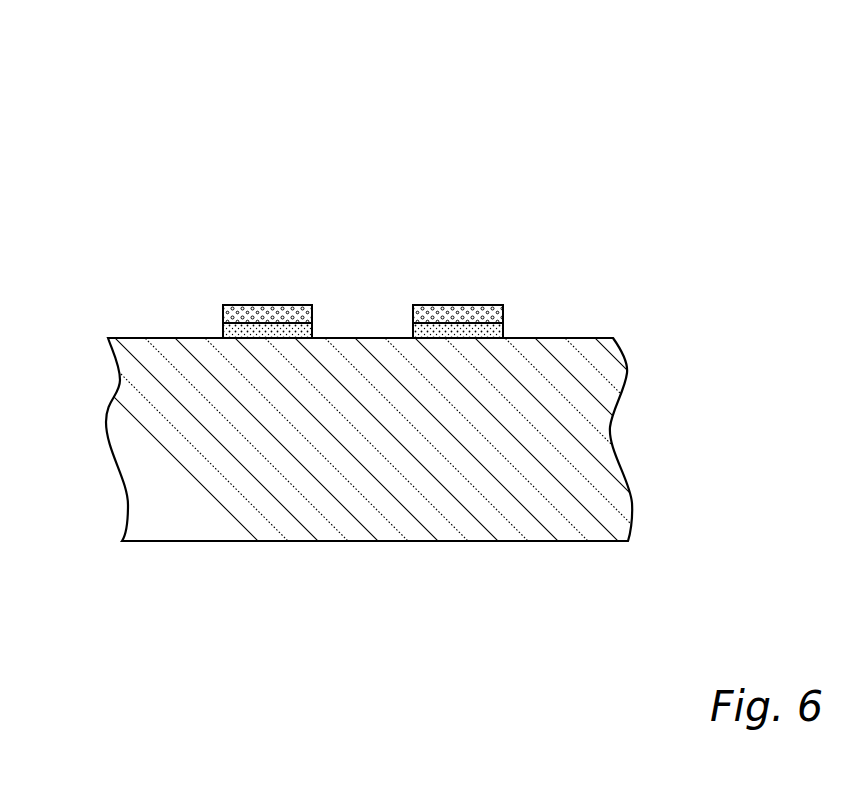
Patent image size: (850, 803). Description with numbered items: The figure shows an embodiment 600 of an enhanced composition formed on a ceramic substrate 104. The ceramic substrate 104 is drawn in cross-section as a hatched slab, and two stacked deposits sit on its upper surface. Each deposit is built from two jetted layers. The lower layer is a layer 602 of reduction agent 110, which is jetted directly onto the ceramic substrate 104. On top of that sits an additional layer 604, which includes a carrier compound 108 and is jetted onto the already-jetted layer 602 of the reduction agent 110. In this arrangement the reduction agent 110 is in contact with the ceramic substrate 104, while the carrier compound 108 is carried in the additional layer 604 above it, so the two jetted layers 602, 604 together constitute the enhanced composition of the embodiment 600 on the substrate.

The ceramic substrate 104 is at (328, 541).
The carrier compound 108 is at (248, 312).
The reduction agent 110 is at (284, 335).
The embodiment 600 is at (594, 160).
The layer of reduction agent 602 is at (222, 328).
The additional layer 604 is at (213, 312).